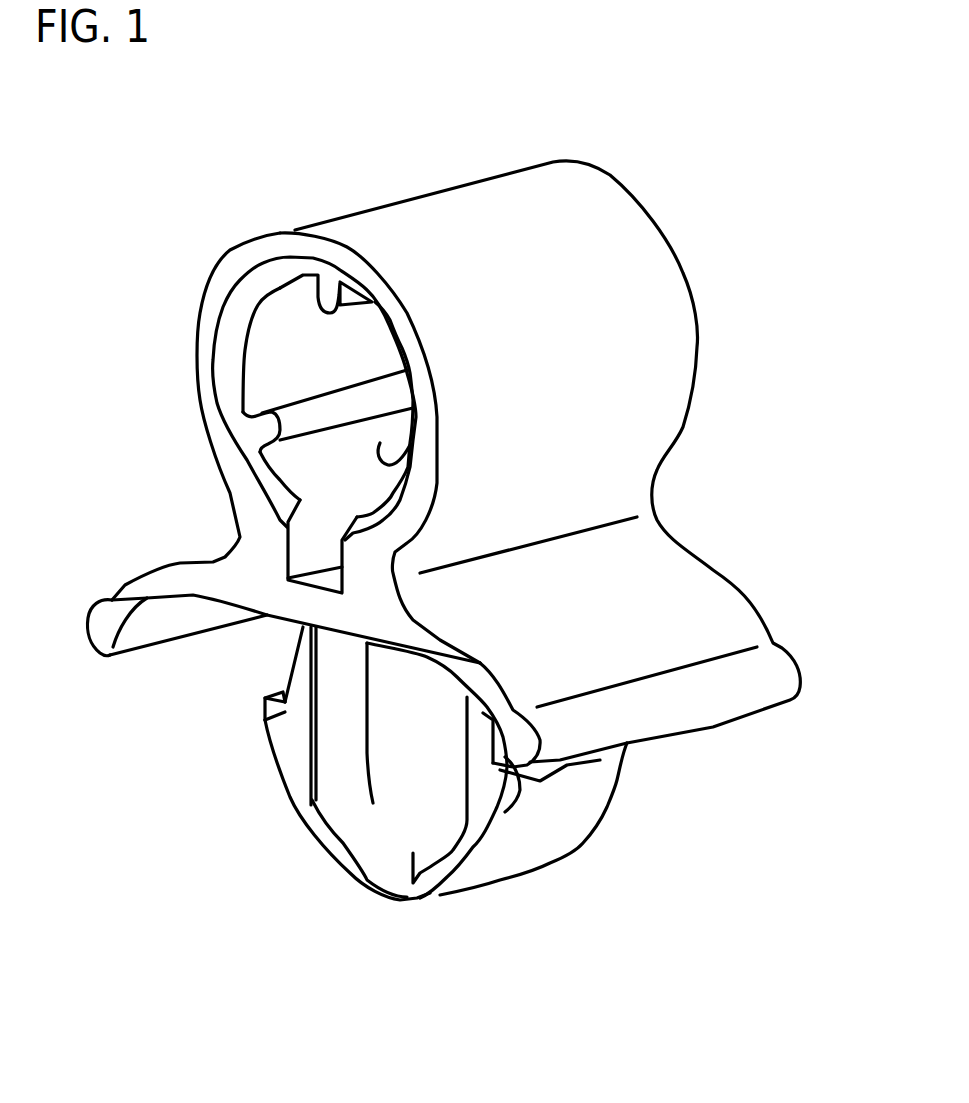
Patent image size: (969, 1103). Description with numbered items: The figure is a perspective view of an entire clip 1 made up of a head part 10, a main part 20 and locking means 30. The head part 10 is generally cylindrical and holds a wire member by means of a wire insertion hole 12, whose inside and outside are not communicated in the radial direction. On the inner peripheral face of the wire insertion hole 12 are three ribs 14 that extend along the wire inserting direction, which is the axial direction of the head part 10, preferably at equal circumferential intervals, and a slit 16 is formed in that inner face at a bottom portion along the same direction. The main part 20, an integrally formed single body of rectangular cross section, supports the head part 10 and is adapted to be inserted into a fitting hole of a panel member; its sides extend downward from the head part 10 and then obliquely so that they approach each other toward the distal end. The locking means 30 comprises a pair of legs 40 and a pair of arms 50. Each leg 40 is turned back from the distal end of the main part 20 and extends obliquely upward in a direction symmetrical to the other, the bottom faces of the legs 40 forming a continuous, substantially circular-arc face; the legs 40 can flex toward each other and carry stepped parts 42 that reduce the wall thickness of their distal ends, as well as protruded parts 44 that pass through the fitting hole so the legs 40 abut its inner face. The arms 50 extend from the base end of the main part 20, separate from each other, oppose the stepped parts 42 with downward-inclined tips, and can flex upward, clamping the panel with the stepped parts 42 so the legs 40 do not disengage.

The clip 1 is at (199, 156).
The head part 10 is at (453, 213).
The wire insertion hole 12 is at (295, 345).
The ribs 14 is at (290, 293).
The slit 16 is at (318, 552).
The main part 20 is at (340, 733).
The locking means 30 is at (157, 863).
The legs 40 is at (287, 755).
The stepped parts 42 is at (283, 697).
The protruded parts 44 is at (270, 707).
The arms 50 is at (108, 657).